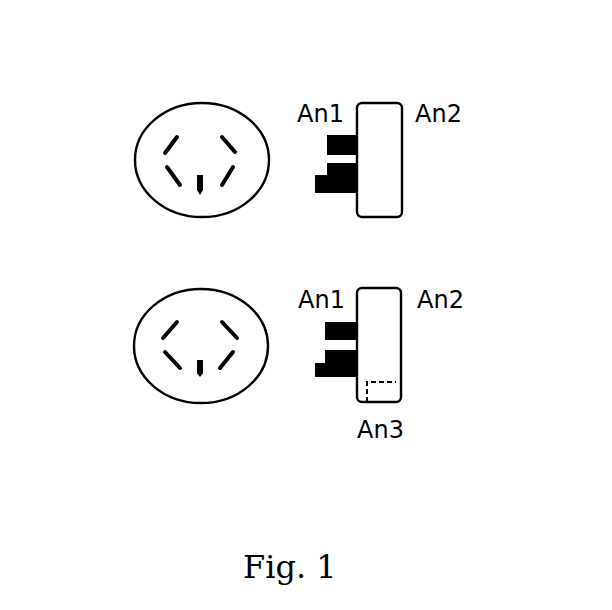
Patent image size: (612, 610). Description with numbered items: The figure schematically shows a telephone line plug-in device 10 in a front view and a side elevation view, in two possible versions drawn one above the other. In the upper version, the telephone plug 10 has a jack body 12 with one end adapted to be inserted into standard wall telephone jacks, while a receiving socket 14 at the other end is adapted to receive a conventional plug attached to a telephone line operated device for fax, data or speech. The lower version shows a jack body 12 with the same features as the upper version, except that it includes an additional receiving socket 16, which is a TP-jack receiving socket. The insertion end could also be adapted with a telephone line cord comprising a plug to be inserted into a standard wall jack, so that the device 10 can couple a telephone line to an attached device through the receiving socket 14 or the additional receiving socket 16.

The telephone line plug-in device 10 is at (190, 102).
The jack body 12 is at (377, 117).
The receiving socket 14 is at (148, 153).
The additional receiving socket 16 is at (387, 388).